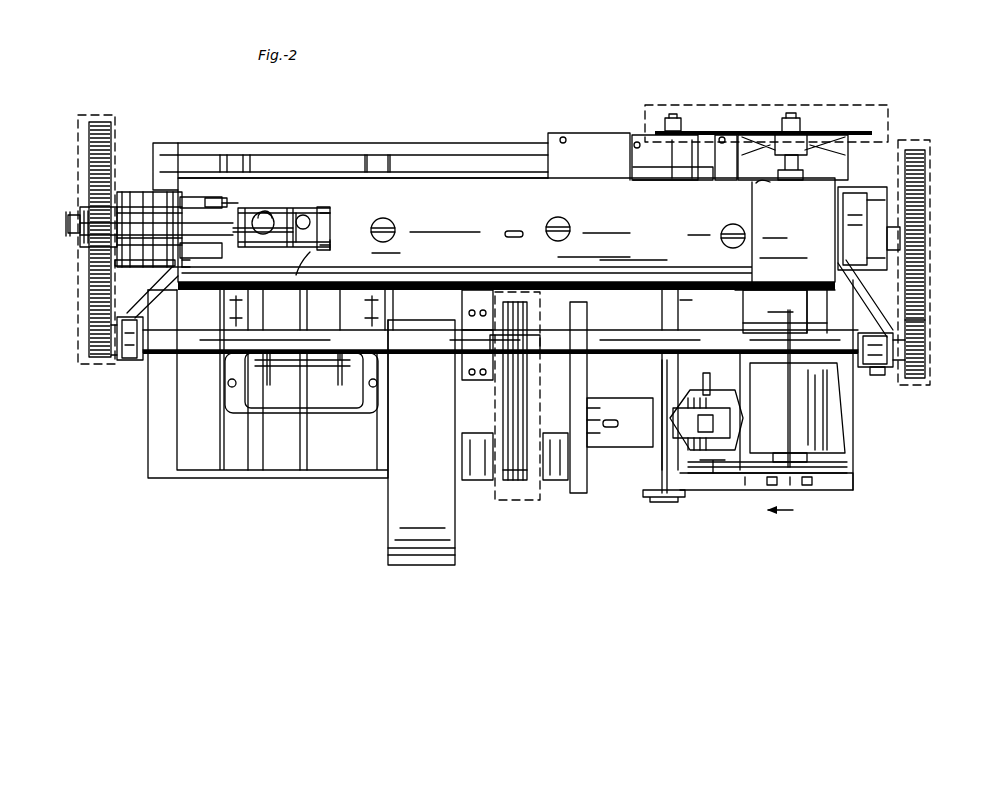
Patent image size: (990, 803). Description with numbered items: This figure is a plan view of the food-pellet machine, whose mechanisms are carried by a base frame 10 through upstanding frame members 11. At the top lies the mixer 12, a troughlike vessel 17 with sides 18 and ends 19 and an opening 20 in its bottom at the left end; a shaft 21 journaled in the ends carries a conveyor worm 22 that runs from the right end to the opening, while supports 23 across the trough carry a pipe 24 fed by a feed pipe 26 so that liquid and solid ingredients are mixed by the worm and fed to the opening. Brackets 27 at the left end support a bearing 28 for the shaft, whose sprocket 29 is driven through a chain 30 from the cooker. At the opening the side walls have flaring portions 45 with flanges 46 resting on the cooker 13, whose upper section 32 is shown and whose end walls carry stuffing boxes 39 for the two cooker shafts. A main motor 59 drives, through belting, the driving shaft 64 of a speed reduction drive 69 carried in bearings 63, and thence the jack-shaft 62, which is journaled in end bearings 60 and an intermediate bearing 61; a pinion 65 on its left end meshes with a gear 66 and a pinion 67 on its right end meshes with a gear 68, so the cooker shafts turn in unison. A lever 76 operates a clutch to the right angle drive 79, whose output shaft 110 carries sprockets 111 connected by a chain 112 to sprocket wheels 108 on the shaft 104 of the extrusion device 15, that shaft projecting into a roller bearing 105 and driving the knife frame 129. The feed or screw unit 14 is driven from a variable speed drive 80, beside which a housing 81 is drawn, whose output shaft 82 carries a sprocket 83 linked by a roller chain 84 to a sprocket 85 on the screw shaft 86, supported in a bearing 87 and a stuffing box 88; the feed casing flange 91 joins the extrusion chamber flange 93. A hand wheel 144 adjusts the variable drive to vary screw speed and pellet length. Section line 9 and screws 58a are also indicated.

The section line 9 is at (778, 414).
The base frame 10 is at (298, 475).
The upstanding frame members 11 is at (173, 178).
The mixer 12 is at (332, 247).
The cooker 13 is at (393, 207).
The feed or screw unit 14 is at (817, 203).
The extrusion device 15 is at (813, 408).
The troughlike vessel 17 is at (330, 210).
The sides 18 is at (298, 213).
The ends 19 is at (332, 215).
The opening 20 is at (195, 202).
The shaft 21 is at (110, 232).
The conveyor worm 22 is at (268, 237).
The supports 23 is at (243, 218).
The pipe 24 is at (262, 238).
The feed pipe 26 is at (305, 213).
The brackets 27 is at (98, 197).
The bearing 28 is at (82, 215).
The sprocket 29 is at (68, 222).
The chain 30 is at (72, 232).
The upper section 32 is at (587, 200).
The stuffing boxes 39 is at (900, 232).
The flaring portions 45 is at (212, 202).
The flanges 46 is at (218, 203).
The screw 58a is at (397, 225).
The main motor 59 is at (312, 363).
The end bearings 60 is at (878, 363).
The intermediate bearing 61 is at (458, 370).
The shaft 62 is at (210, 342).
The bearings 63 is at (458, 455).
The driving shaft 64 is at (498, 480).
The pinion 65 is at (77, 239).
The gear 66 is at (88, 293).
The pinion 67 is at (923, 348).
The gear 68 is at (917, 270).
The speed reduction drive 69 is at (513, 297).
The lever 76 is at (608, 420).
The right angle drive casing 79 is at (737, 413).
The variable speed drive casing 80 is at (650, 170).
The housing 81 is at (657, 157).
The output shaft 82 is at (675, 118).
The sprocket 83 is at (662, 132).
The roller chain 84 is at (722, 133).
The sprocket 85 is at (838, 130).
The shaft 86 is at (793, 118).
The bearing 87 is at (775, 140).
The stuffing box 88 is at (765, 183).
The flange 91 is at (752, 315).
The flange 93 is at (790, 367).
The shaft 104 is at (803, 462).
The roller bearing 105 is at (800, 488).
The sprocket wheels 108 is at (847, 473).
The output shaft 110 is at (710, 380).
The sprockets 111 is at (718, 473).
The chain 112 is at (760, 487).
The frame 129 is at (827, 437).
The hand wheel 144 is at (670, 497).